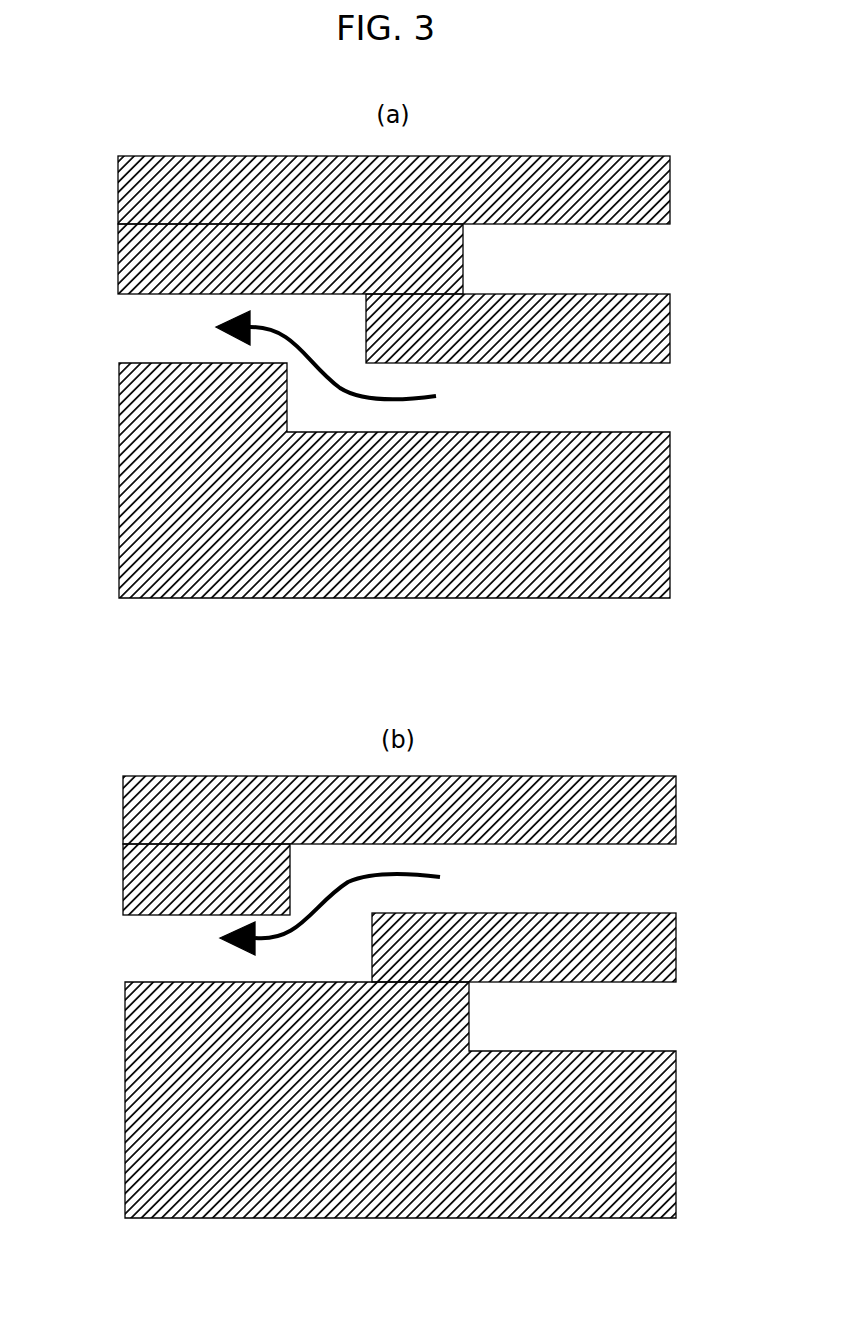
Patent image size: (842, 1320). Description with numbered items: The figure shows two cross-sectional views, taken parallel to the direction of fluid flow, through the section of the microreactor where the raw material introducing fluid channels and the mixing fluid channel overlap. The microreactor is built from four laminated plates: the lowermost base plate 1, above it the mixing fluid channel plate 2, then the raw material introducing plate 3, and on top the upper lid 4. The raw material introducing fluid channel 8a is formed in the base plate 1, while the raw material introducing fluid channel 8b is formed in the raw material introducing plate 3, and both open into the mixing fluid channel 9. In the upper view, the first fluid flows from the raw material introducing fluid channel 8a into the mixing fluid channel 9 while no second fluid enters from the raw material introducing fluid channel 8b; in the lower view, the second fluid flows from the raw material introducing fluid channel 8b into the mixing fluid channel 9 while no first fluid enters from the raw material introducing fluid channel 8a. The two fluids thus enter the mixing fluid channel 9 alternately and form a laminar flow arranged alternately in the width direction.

The base plate 1 is at (135, 475).
The mixing fluid channel plate 2 is at (645, 334).
The raw material introducing plate 3 is at (133, 259).
The upper lid 4 is at (133, 200).
The raw material introducing fluid channel 8a is at (648, 408).
The raw material introducing fluid channel 8b is at (648, 262).
The mixing fluid channel 9 is at (136, 332).